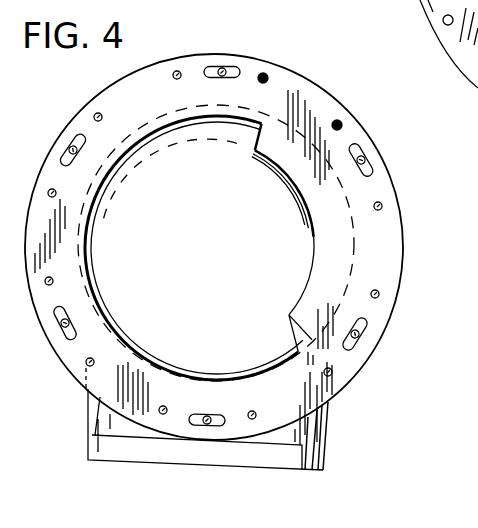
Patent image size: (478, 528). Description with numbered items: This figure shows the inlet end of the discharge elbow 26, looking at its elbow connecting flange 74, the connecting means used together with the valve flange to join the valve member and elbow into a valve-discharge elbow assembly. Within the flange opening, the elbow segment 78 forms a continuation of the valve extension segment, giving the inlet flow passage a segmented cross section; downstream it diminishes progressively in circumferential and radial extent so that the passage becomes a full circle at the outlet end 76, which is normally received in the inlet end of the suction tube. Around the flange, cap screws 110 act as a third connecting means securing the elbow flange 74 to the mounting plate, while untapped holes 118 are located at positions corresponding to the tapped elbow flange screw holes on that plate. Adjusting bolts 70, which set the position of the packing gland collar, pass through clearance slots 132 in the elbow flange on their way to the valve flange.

The discharge elbow 26 is at (333, 425).
The adjusting bolts 70 is at (212, 70).
The elbow connecting flange 74 is at (403, 243).
The outlet end 76 is at (196, 467).
The elbow segment 78 is at (315, 237).
The cap screws 110 is at (263, 78).
The untapped holes 118 is at (266, 80).
The clearance slots 132 is at (238, 67).